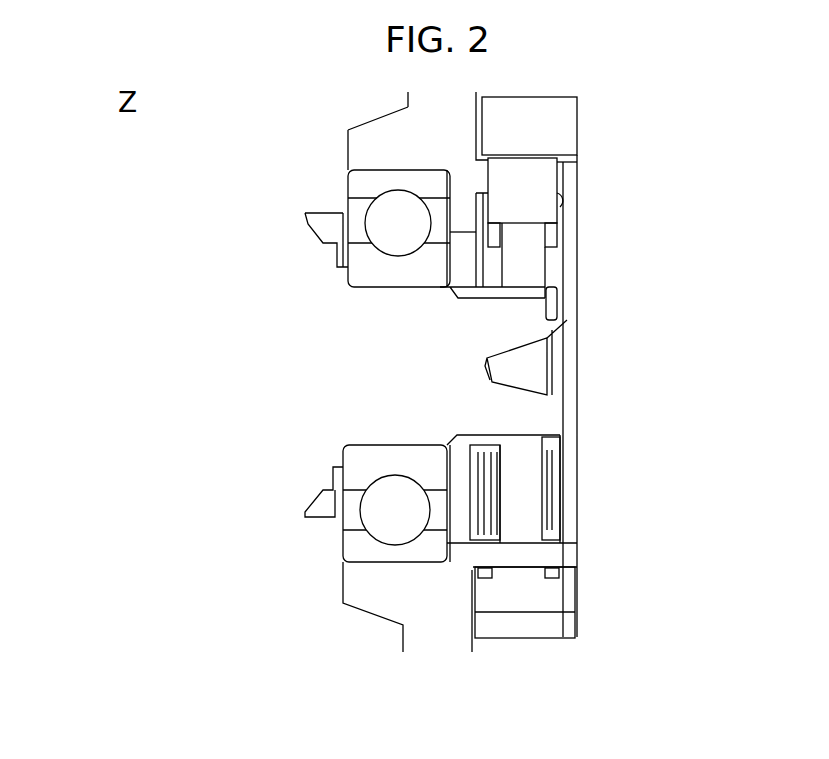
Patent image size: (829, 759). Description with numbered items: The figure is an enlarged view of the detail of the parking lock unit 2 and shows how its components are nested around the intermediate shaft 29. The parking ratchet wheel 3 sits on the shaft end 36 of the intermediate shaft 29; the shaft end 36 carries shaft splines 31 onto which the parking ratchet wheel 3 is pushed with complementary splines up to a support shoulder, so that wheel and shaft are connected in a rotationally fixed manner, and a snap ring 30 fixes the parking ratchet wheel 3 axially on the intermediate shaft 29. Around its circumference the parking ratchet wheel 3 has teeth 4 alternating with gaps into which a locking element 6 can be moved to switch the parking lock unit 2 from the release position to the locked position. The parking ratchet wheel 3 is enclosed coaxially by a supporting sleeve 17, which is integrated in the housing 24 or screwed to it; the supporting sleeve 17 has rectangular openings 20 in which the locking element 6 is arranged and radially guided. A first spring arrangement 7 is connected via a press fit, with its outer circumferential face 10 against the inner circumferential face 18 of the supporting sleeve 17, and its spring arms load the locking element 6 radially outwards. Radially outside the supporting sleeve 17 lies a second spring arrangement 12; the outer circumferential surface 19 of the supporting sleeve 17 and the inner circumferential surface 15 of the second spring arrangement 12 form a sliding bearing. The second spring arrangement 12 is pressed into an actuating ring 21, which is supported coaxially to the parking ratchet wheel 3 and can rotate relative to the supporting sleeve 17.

The parking lock unit 2 is at (693, 278).
The parking ratchet wheel 3 is at (527, 455).
The teeth 4 is at (527, 518).
The locking element 6 is at (543, 165).
The first spring arrangement 7 is at (555, 273).
The outer circumferential face 10 is at (485, 190).
The second spring arrangement 12 is at (550, 573).
The inner circumferential surface 15 is at (508, 548).
The supporting sleeve 17 is at (558, 555).
The inner circumferential face 18 is at (562, 193).
The outer circumferential surface 19 is at (512, 538).
The opening 20 is at (488, 170).
The actuating ring 21 is at (535, 118).
The housing 24 is at (373, 140).
The intermediate shaft 29 is at (447, 338).
The snap ring 30 is at (546, 287).
The shaft splines 31 is at (508, 293).
The shaft end 36 is at (518, 418).